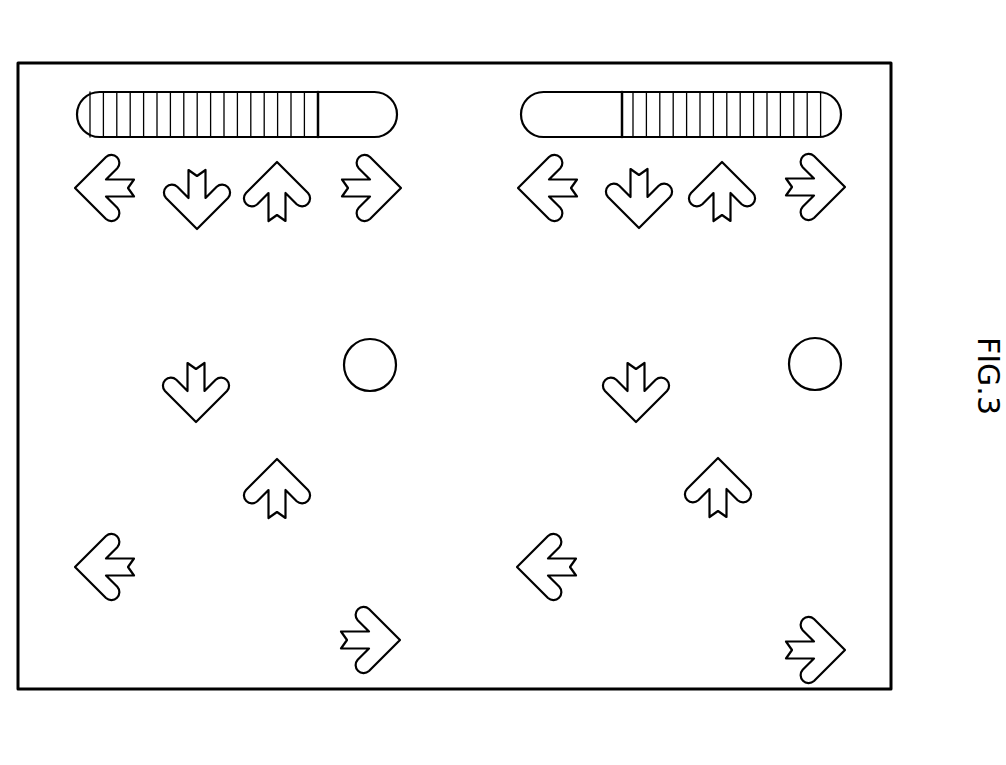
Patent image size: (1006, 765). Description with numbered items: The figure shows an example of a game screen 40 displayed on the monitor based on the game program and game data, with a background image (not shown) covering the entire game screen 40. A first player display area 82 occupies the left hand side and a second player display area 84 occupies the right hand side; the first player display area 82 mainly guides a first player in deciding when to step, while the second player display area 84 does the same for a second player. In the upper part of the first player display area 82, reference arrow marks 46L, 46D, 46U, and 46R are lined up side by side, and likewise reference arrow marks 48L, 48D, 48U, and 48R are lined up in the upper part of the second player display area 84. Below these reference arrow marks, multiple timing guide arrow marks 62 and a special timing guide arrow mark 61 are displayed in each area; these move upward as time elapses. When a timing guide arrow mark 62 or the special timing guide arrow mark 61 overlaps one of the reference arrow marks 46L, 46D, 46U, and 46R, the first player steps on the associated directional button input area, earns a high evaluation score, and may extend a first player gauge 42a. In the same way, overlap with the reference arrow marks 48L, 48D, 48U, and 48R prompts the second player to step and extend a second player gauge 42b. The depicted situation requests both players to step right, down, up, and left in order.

The game screen 40 is at (892, 298).
The first player gauge 42a is at (358, 92).
The second player gauge 42b is at (586, 92).
The reference arrow mark 46L is at (96, 212).
The reference arrow mark 46D is at (213, 213).
The reference arrow mark 46U is at (288, 212).
The reference arrow mark 46R is at (378, 213).
The reference arrow mark 48L is at (535, 212).
The reference arrow mark 48D is at (620, 216).
The reference arrow mark 48U is at (733, 210).
The reference arrow mark 48R is at (828, 205).
The first player display area 82 is at (132, 323).
The second player display area 84 is at (587, 315).
The special timing guide arrow mark 61 is at (396, 366).
The timing guide arrow mark 62 is at (209, 378).